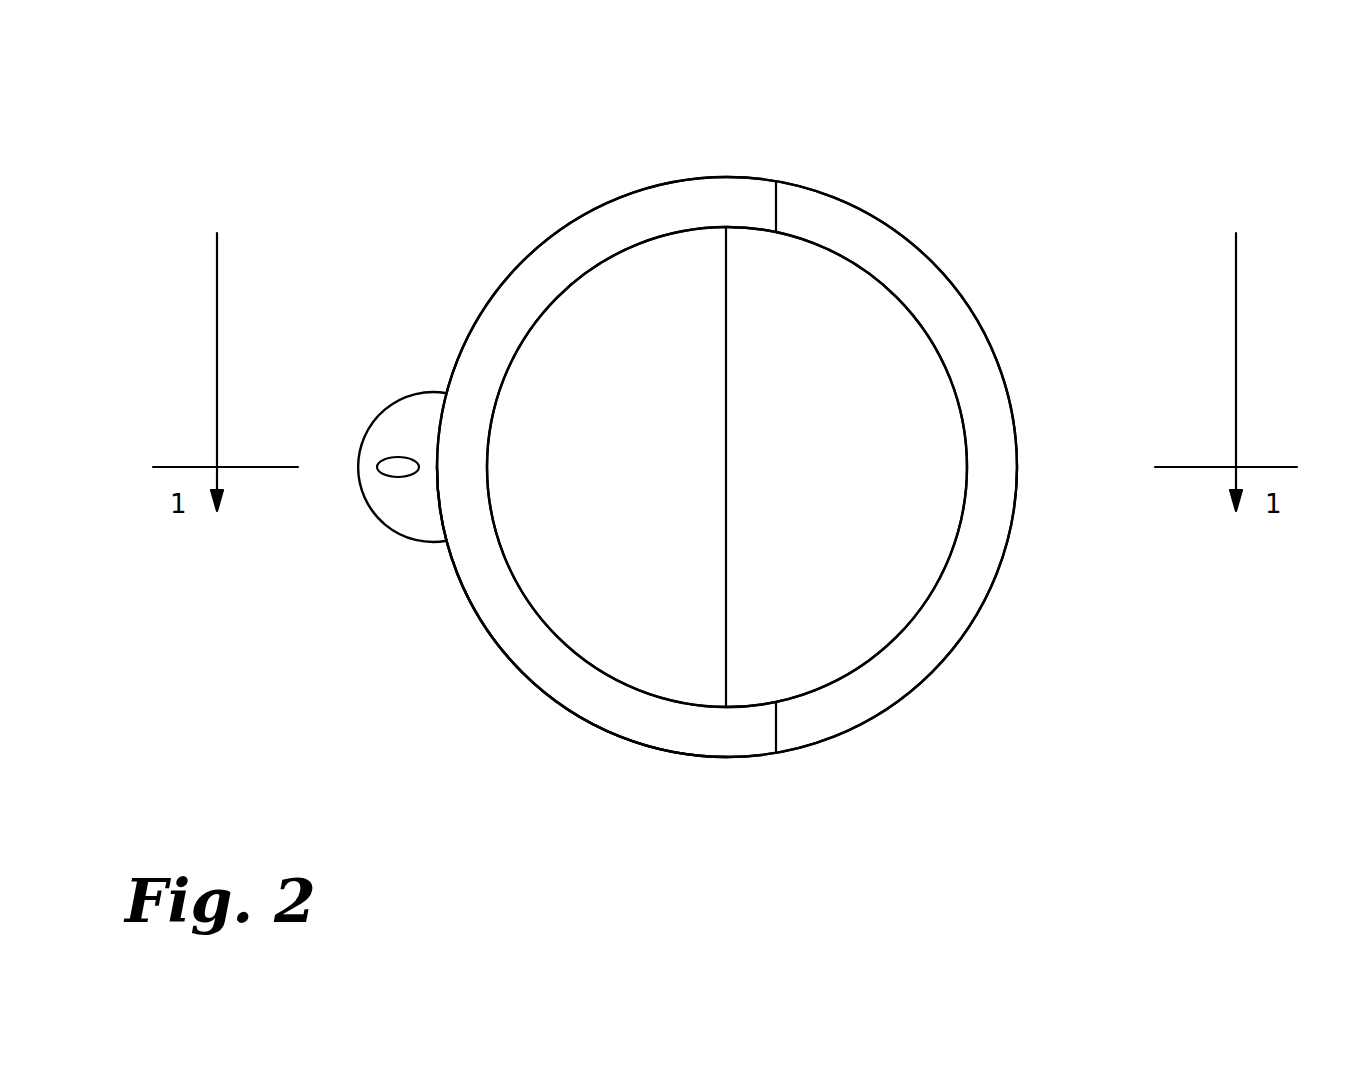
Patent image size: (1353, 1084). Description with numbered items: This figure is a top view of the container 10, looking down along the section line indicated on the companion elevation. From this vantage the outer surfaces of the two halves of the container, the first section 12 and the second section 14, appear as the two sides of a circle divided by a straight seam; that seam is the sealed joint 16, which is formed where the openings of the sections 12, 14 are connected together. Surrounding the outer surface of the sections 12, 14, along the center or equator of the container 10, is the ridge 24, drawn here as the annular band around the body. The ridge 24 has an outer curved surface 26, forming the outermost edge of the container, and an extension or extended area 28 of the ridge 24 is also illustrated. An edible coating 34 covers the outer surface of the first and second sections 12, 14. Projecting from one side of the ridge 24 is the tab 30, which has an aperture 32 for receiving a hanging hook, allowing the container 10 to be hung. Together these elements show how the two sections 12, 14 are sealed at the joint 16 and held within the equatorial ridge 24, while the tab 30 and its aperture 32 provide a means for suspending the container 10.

The container 10 is at (1245, 126).
The first section 12 is at (575, 325).
The second section 14 is at (848, 297).
The sealed joint 16 is at (726, 250).
The ridge 24 is at (972, 550).
The outer curved surface 26 is at (643, 745).
The extended area 28 is at (562, 675).
The tab 30 is at (413, 522).
The aperture 32 is at (395, 468).
The edible coating 34 is at (845, 620).